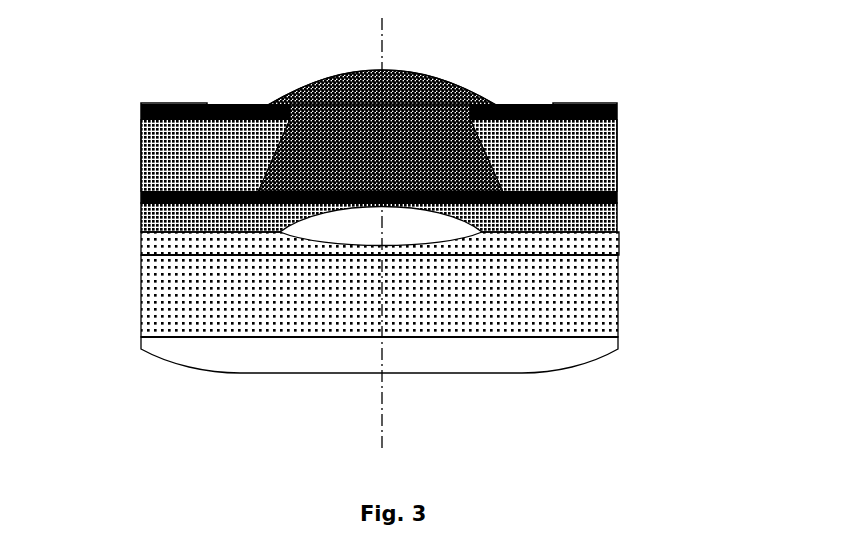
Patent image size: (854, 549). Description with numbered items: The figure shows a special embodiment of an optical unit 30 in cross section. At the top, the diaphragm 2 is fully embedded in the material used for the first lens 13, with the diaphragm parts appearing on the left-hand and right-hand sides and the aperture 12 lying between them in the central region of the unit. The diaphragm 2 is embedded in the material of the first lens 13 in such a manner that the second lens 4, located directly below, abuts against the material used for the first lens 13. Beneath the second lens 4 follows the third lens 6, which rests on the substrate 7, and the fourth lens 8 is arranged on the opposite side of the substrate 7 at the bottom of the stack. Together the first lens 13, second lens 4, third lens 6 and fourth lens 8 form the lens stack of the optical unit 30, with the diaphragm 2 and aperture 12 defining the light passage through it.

The optical unit 30 is at (128, 113).
The first lens 13 is at (338, 87).
The aperture 12 is at (365, 150).
The diaphragm 2 is at (176, 164).
The second lens 4 is at (614, 217).
The third lens 6 is at (608, 245).
The substrate 7 is at (608, 297).
The fourth lens 8 is at (575, 355).